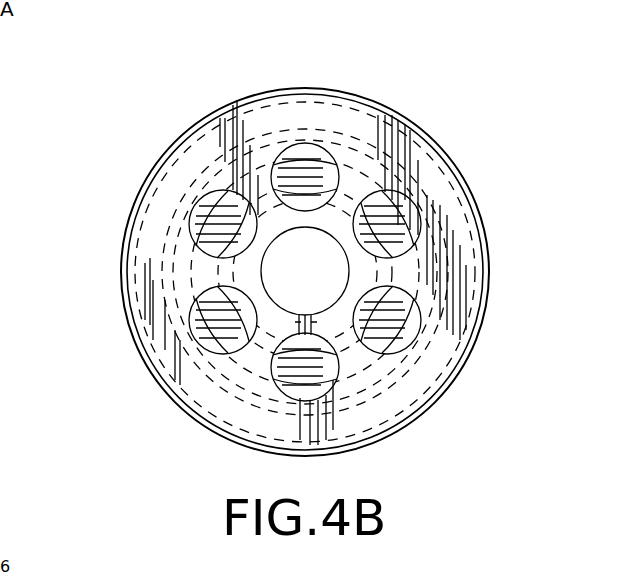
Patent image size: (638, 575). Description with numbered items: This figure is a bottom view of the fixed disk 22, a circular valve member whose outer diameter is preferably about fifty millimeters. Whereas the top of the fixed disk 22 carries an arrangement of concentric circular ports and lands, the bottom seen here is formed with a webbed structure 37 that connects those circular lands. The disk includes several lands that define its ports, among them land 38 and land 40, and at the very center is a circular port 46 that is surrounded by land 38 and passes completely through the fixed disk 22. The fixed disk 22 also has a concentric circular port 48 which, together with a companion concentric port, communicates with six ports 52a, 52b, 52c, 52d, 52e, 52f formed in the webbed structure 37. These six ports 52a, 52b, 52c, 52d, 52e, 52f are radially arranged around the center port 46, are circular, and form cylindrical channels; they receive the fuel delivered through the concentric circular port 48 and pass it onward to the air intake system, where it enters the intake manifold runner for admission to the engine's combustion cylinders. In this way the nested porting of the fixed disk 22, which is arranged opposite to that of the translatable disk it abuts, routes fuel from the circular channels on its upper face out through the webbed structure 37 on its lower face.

The fixed disk 22 is at (427, 413).
The webbed structure 37 is at (240, 112).
The land 38 is at (345, 178).
The land 40 is at (405, 196).
The center port 46 is at (322, 285).
The concentric circular port 48 is at (215, 232).
The port 52a is at (307, 143).
The port 52b is at (417, 211).
The port 52c is at (405, 336).
The port 52d is at (297, 398).
The port 52e is at (200, 327).
The port 52f is at (203, 194).